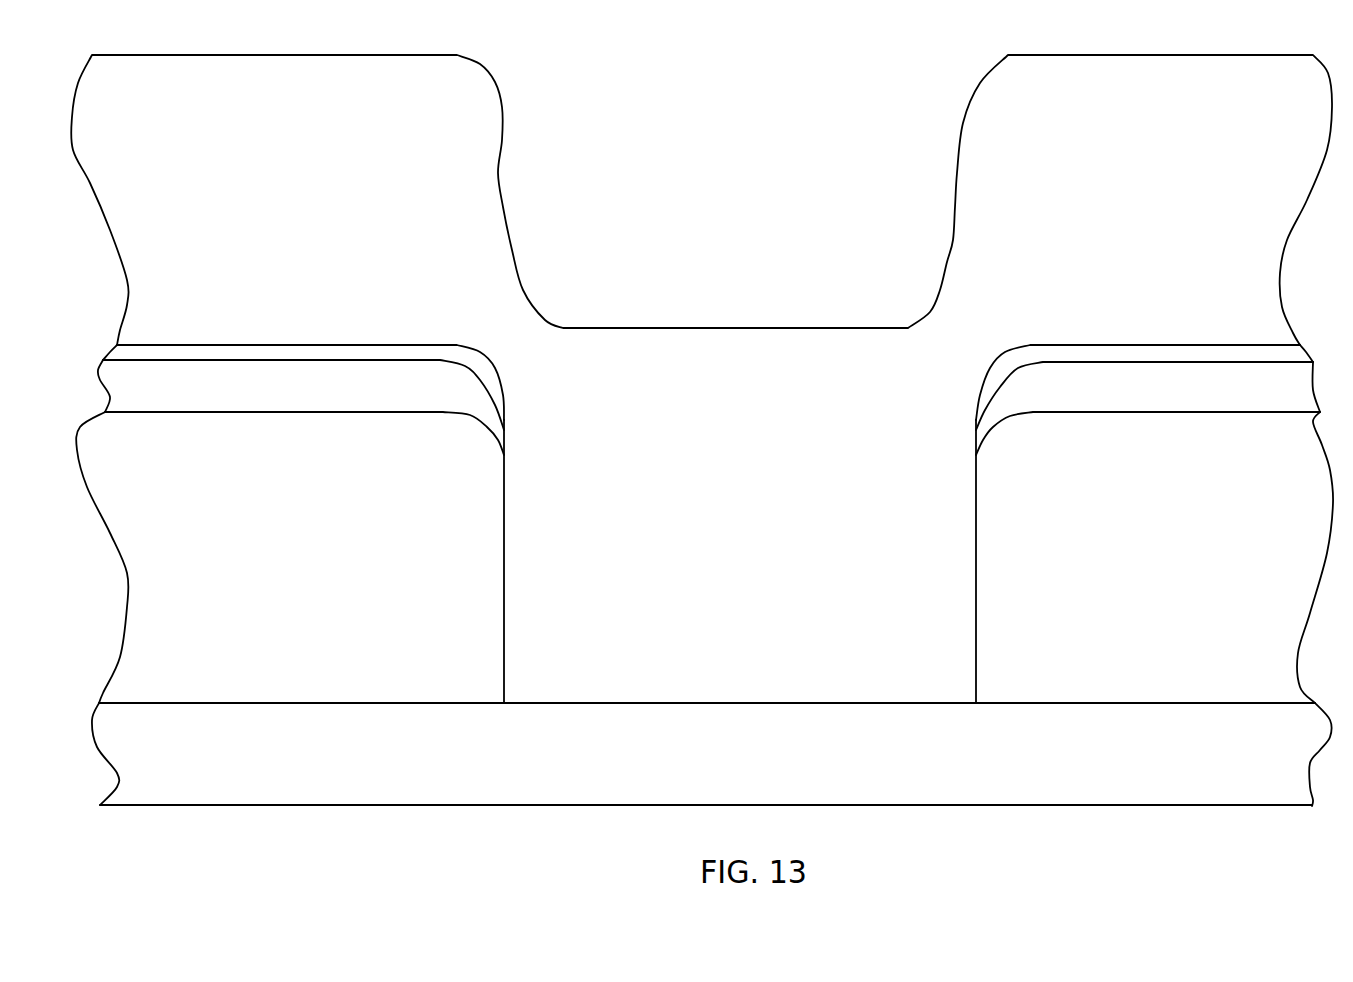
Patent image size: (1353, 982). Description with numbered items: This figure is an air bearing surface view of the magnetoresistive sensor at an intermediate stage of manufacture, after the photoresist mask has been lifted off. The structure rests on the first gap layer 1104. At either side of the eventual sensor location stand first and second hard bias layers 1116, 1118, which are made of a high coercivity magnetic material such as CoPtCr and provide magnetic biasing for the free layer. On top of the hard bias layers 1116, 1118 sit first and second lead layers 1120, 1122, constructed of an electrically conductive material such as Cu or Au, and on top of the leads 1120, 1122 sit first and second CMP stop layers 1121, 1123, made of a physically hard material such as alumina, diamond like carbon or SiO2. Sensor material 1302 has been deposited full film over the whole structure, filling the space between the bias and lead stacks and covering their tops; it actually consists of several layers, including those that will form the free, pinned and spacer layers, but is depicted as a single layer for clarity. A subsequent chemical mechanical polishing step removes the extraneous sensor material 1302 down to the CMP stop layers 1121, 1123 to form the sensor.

The first gap layer 1104 is at (782, 755).
The first hard bias layer 1116 is at (1169, 557).
The second hard bias layer 1118 is at (353, 557).
The first lead layer 1120 is at (1206, 383).
The first CMP stop layer 1121 is at (342, 357).
The second lead layer 1122 is at (333, 380).
The second CMP stop layer 1123 is at (1208, 358).
The sensor material 1302 is at (799, 520).